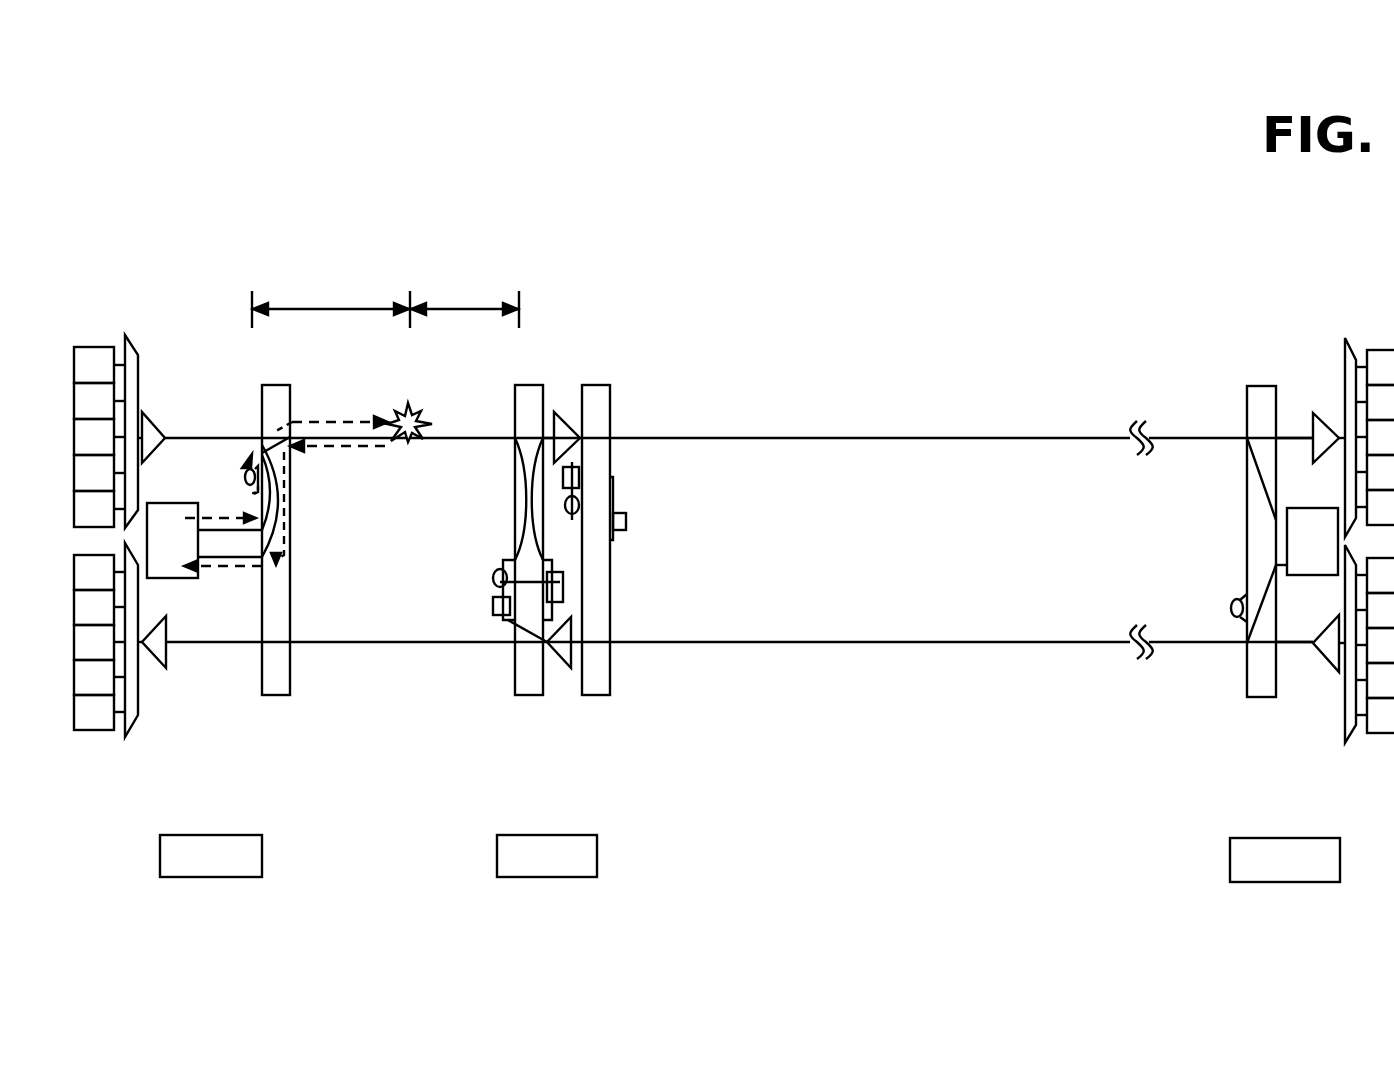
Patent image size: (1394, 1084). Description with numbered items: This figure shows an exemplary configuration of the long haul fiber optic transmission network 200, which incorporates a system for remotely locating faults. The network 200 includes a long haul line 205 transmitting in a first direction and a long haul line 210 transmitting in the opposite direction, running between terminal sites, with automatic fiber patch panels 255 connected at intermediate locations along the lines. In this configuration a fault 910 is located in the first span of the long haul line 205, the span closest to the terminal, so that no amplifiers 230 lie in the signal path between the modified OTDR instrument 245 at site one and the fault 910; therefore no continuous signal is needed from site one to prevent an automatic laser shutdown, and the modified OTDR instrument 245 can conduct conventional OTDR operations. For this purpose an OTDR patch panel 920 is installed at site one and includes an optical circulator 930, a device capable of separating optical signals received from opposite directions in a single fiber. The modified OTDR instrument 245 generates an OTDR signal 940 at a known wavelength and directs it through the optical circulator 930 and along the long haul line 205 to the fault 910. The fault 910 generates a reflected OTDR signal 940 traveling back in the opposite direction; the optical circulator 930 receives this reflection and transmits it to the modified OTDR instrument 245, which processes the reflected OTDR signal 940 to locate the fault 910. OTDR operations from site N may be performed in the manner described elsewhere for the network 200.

The long haul fiber optic transmission network 200 is at (584, 176).
The long haul line 205 is at (1120, 344).
The long haul line 210 is at (304, 737).
The amplifier 230 is at (560, 410).
The modified OTDR instrument 245 is at (160, 503).
The automatic fiber patch panel 255 is at (598, 695).
The fault 910 is at (419, 412).
The OTDR patch panel 920 is at (262, 391).
The optical circulator 930 is at (245, 478).
The OTDR signal 940 is at (322, 421).